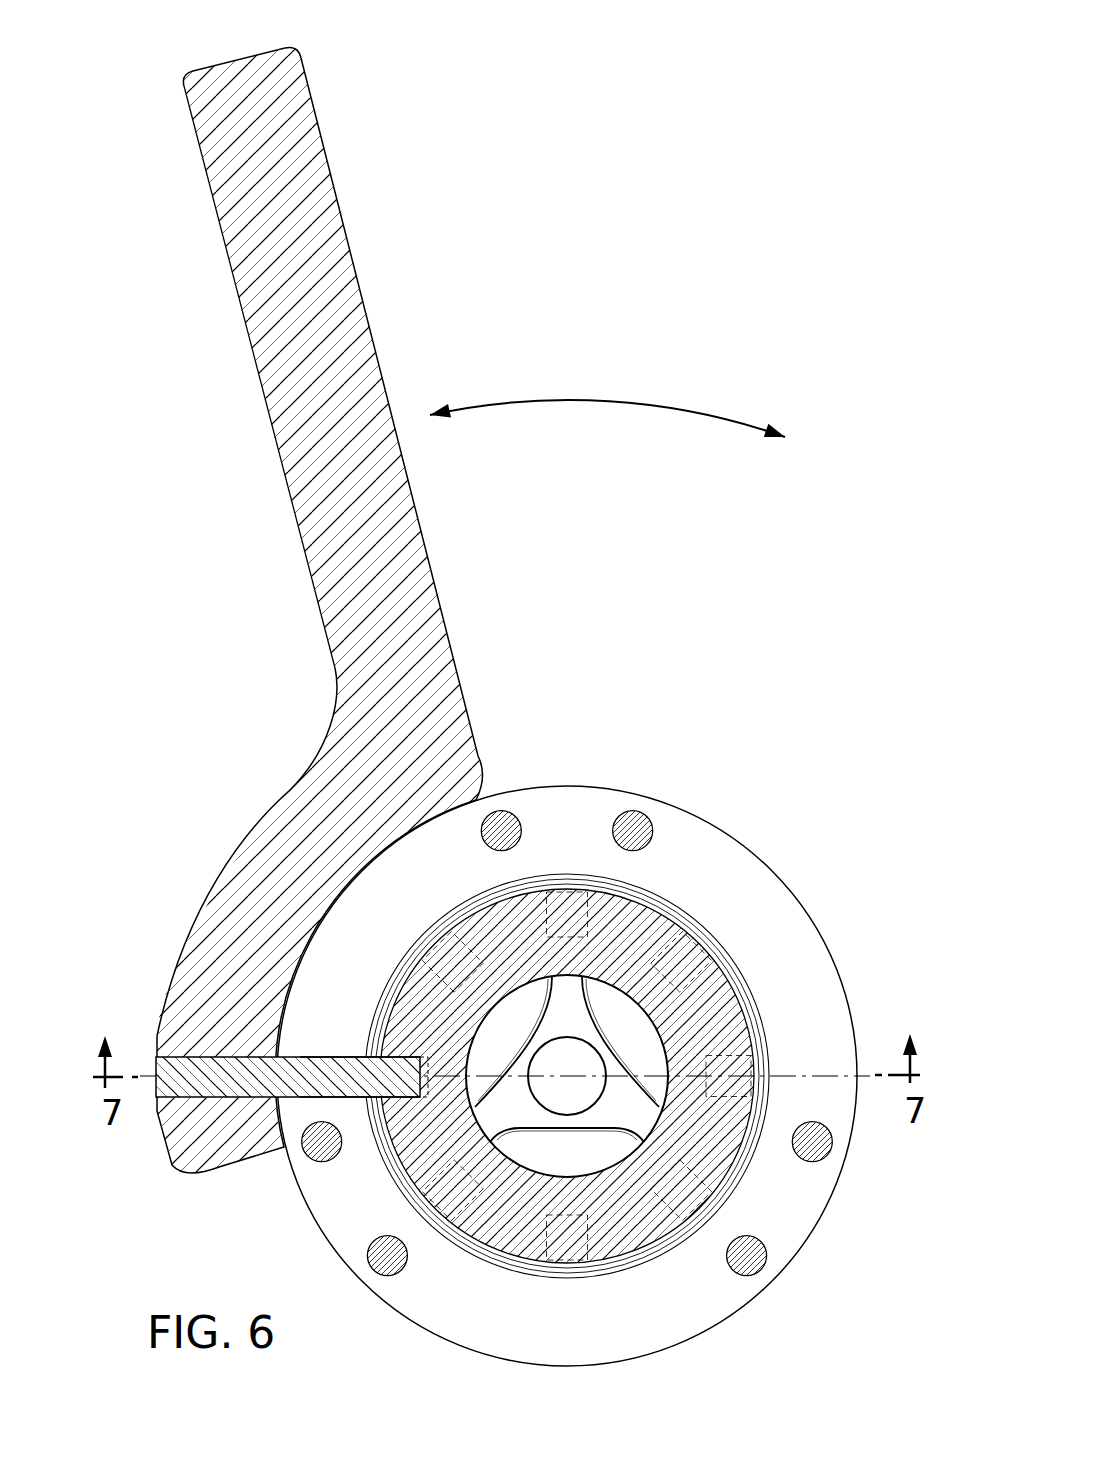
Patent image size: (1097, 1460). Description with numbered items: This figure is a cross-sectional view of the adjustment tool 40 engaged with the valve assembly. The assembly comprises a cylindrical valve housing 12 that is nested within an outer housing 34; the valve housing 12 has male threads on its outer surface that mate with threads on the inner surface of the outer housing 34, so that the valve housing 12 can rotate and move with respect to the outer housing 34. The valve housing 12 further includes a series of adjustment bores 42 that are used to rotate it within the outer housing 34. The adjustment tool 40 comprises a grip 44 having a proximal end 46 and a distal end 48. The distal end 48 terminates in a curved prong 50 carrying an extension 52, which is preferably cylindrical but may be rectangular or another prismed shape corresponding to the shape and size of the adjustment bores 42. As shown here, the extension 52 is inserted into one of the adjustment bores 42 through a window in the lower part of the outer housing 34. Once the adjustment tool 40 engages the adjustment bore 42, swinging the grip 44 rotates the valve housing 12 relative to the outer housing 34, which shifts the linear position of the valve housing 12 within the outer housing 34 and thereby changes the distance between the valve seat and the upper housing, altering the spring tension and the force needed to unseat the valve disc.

The valve housing 12 is at (773, 910).
The outer housing 34 is at (678, 808).
The adjustment tool 40 is at (267, 348).
The adjustment bores 42 is at (400, 1096).
The grip 44 is at (385, 335).
The proximal end 46 is at (298, 56).
The distal end 48 is at (398, 673).
The curved prong 50 is at (268, 848).
The extension 52 is at (320, 1096).